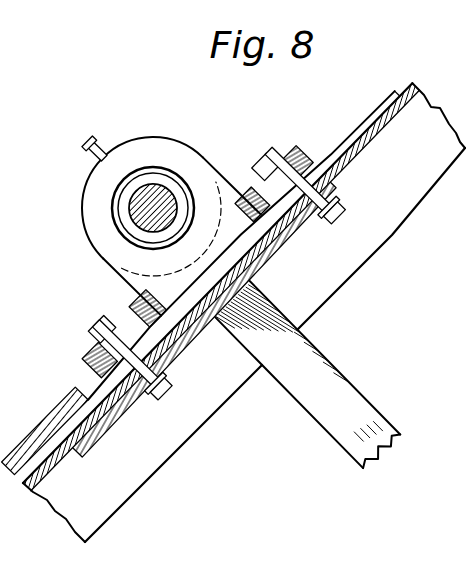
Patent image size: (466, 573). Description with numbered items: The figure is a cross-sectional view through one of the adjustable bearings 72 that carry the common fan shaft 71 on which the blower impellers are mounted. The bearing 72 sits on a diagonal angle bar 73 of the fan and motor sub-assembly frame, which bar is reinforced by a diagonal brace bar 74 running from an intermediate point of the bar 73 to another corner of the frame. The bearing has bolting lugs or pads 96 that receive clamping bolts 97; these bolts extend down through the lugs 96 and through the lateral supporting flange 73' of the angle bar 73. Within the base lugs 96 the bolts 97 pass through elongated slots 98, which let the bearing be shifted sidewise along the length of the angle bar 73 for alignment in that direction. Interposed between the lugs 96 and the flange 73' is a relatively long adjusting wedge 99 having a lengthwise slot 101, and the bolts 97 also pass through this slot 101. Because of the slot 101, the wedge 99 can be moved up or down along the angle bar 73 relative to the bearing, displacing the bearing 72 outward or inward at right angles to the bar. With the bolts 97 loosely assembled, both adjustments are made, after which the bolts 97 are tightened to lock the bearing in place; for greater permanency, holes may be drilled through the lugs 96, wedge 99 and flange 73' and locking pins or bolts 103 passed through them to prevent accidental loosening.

The fan shaft 71 is at (149, 193).
The adjustable bearing 72 is at (84, 237).
The diagonal angle bar 73 is at (238, 312).
The lateral supporting flange 73' is at (221, 280).
The diagonal brace bar 74 is at (339, 442).
The bolting lug 96 is at (303, 147).
The clamping bolt 97 is at (263, 164).
The elongated slot 98 is at (275, 221).
The adjusting wedge 99 is at (52, 416).
The lengthwise slot 101 is at (364, 160).
The locking pin 103 is at (286, 148).